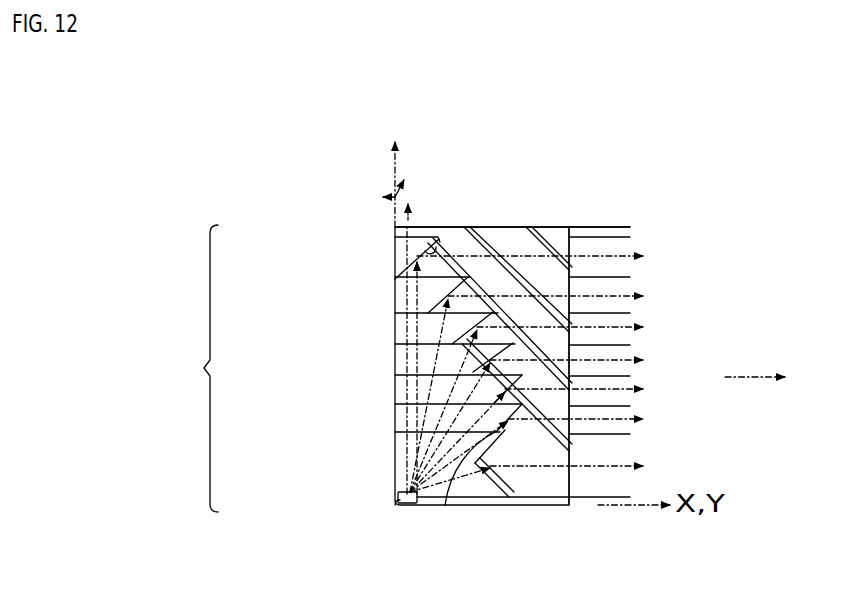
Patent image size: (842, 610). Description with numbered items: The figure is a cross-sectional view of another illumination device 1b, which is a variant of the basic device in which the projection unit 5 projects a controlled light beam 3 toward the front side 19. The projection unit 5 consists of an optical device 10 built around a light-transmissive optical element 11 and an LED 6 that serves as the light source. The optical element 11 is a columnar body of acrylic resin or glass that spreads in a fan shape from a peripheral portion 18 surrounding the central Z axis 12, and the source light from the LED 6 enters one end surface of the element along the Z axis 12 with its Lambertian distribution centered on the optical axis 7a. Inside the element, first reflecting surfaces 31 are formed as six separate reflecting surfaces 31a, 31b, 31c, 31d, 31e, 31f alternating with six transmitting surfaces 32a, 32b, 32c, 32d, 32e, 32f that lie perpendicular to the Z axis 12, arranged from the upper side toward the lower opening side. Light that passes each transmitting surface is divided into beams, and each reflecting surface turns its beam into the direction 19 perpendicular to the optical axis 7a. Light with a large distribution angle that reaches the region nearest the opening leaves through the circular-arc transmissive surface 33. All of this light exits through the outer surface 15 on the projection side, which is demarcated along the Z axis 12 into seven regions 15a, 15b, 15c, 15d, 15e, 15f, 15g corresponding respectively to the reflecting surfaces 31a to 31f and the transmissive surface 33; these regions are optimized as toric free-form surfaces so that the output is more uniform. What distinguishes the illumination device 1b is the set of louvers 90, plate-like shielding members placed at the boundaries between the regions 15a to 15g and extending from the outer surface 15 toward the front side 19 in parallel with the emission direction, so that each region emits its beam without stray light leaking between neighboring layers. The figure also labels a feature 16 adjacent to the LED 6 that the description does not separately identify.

The illumination device 1b is at (610, 165).
The light 3 is at (655, 240).
The projection unit 5 is at (492, 188).
The LED 6 is at (410, 505).
The optical axis 7a is at (408, 216).
The optical device 10 is at (505, 195).
The optical element 11 is at (542, 227).
The Z axis 12 is at (395, 170).
The outer surface 15 is at (583, 508).
The region 15a is at (572, 237).
The region 15b is at (572, 305).
The region 15c is at (572, 338).
The region 15d is at (572, 372).
The region 15e is at (572, 398).
The region 15f is at (572, 428).
The region 15g is at (572, 448).
The incident surface 16 is at (383, 503).
The peripheral portion 18 is at (406, 178).
The front side 19 is at (740, 377).
The first reflecting surfaces 31 is at (194, 368).
The reflecting surface 31a is at (395, 240).
The reflecting surface 31b is at (395, 290).
The reflecting surface 31c is at (395, 353).
The reflecting surface 31d is at (395, 387).
The reflecting surface 31e is at (475, 405).
The reflecting surface 31f is at (480, 440).
The transmitting surface 32a is at (470, 277).
The transmitting surface 32b is at (432, 313).
The transmitting surface 32c is at (455, 345).
The transmitting surface 32d is at (478, 376).
The transmitting surface 32e is at (495, 406).
The transmitting surface 32f is at (497, 432).
The transmissive surface 33 is at (462, 497).
The louvers 90 is at (620, 225).